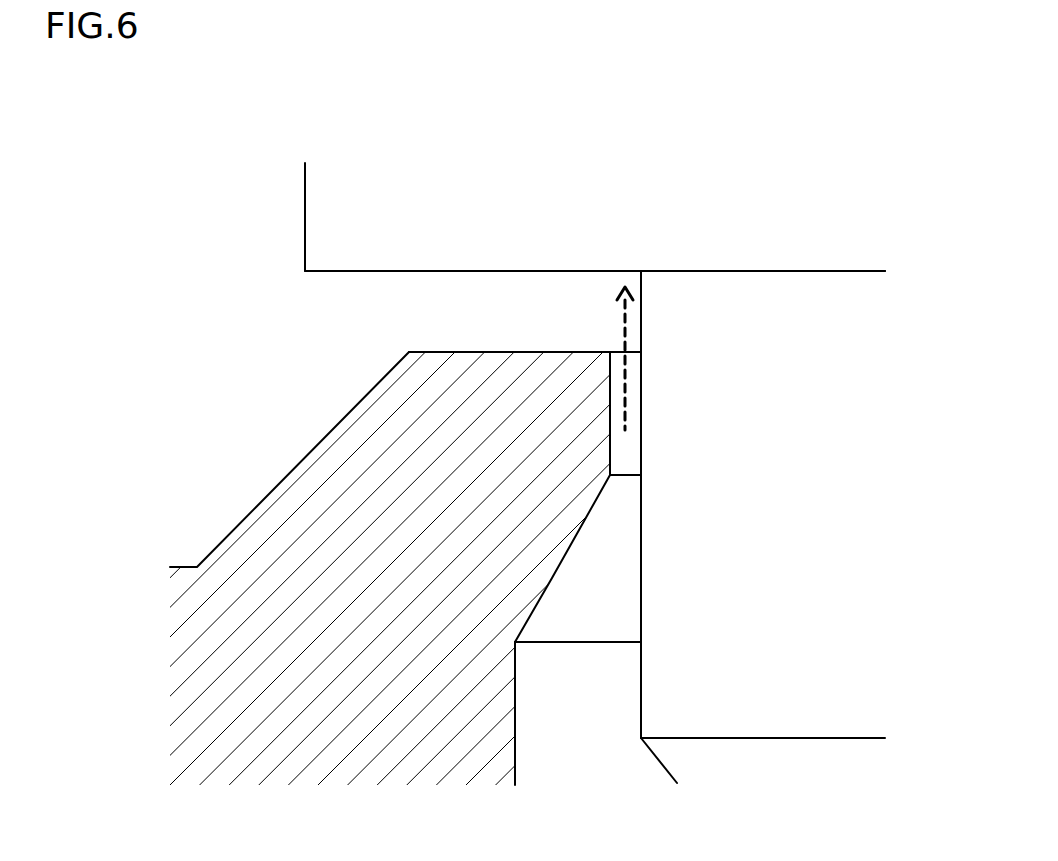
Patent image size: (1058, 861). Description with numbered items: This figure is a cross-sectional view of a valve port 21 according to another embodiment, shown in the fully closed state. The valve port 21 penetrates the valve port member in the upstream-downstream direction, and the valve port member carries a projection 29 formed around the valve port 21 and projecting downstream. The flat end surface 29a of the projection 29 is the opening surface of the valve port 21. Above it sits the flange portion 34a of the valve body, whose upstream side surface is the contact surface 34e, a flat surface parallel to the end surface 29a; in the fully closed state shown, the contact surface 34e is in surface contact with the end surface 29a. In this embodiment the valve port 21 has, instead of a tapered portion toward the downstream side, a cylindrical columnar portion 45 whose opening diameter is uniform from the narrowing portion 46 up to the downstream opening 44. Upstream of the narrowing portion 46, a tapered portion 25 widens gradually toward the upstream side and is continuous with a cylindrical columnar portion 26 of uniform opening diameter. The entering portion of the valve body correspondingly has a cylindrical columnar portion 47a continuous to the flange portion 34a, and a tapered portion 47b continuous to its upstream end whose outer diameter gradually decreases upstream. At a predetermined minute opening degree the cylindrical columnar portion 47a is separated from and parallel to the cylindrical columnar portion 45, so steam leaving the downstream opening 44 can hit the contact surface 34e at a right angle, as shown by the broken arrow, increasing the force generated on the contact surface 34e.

The flange portion 34a is at (327, 224).
The contact surface 34e is at (352, 272).
The projection 29 is at (367, 488).
The end surface 29a is at (466, 350).
The valve port 21 is at (597, 506).
The downstream opening 44 is at (635, 353).
The cylindrical columnar portion 45 is at (610, 453).
The narrowing portion 46 is at (625, 476).
The tapered portion 25 is at (552, 579).
The cylindrical columnar portion 26 is at (516, 766).
The cylindrical columnar portion 47a is at (795, 452).
The tapered portion 47b is at (787, 760).